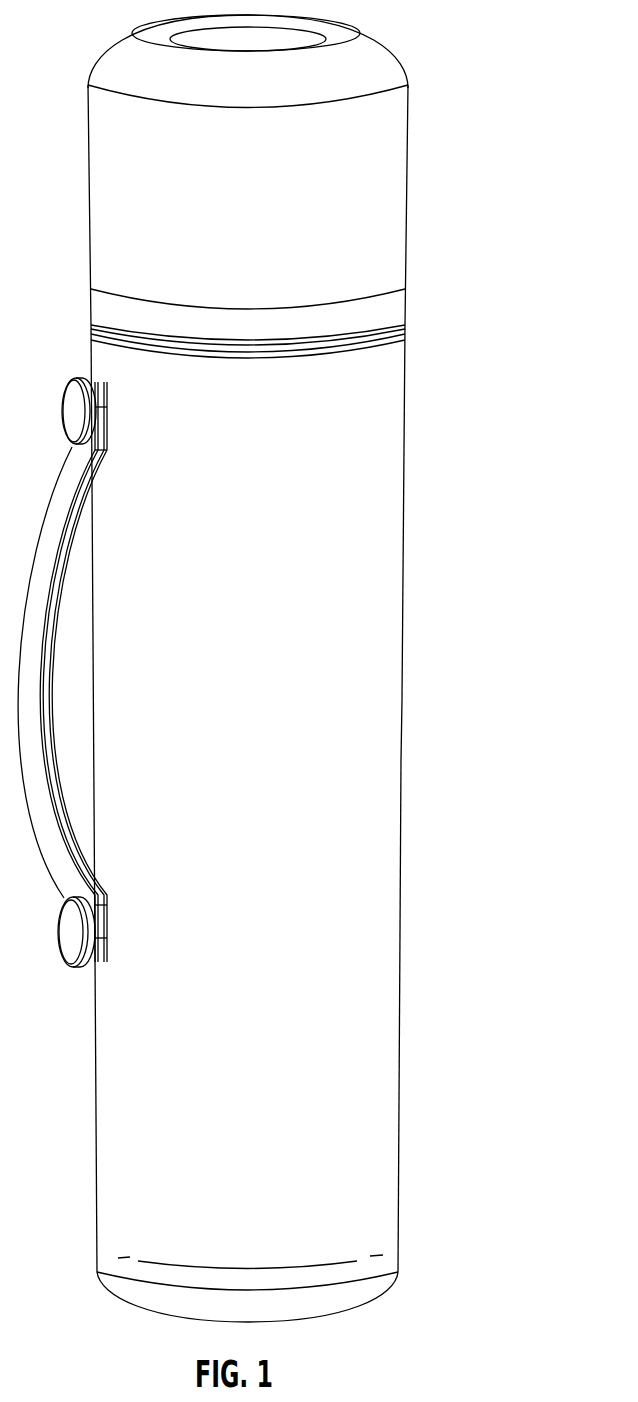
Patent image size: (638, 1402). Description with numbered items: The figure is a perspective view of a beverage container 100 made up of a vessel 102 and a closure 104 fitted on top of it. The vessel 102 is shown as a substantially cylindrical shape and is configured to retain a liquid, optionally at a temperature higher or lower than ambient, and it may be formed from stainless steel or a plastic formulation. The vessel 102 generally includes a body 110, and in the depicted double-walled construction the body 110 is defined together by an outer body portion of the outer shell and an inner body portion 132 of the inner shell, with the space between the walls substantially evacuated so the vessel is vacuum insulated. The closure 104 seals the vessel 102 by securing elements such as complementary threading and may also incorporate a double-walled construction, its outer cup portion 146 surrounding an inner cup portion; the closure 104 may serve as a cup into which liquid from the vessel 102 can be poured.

The beverage container 100 is at (492, 492).
The vessel 102 is at (397, 745).
The closure 104 is at (397, 178).
The body 110 is at (397, 875).
The inner body portion 132 is at (397, 642).
The outer cup portion 146 is at (397, 248).